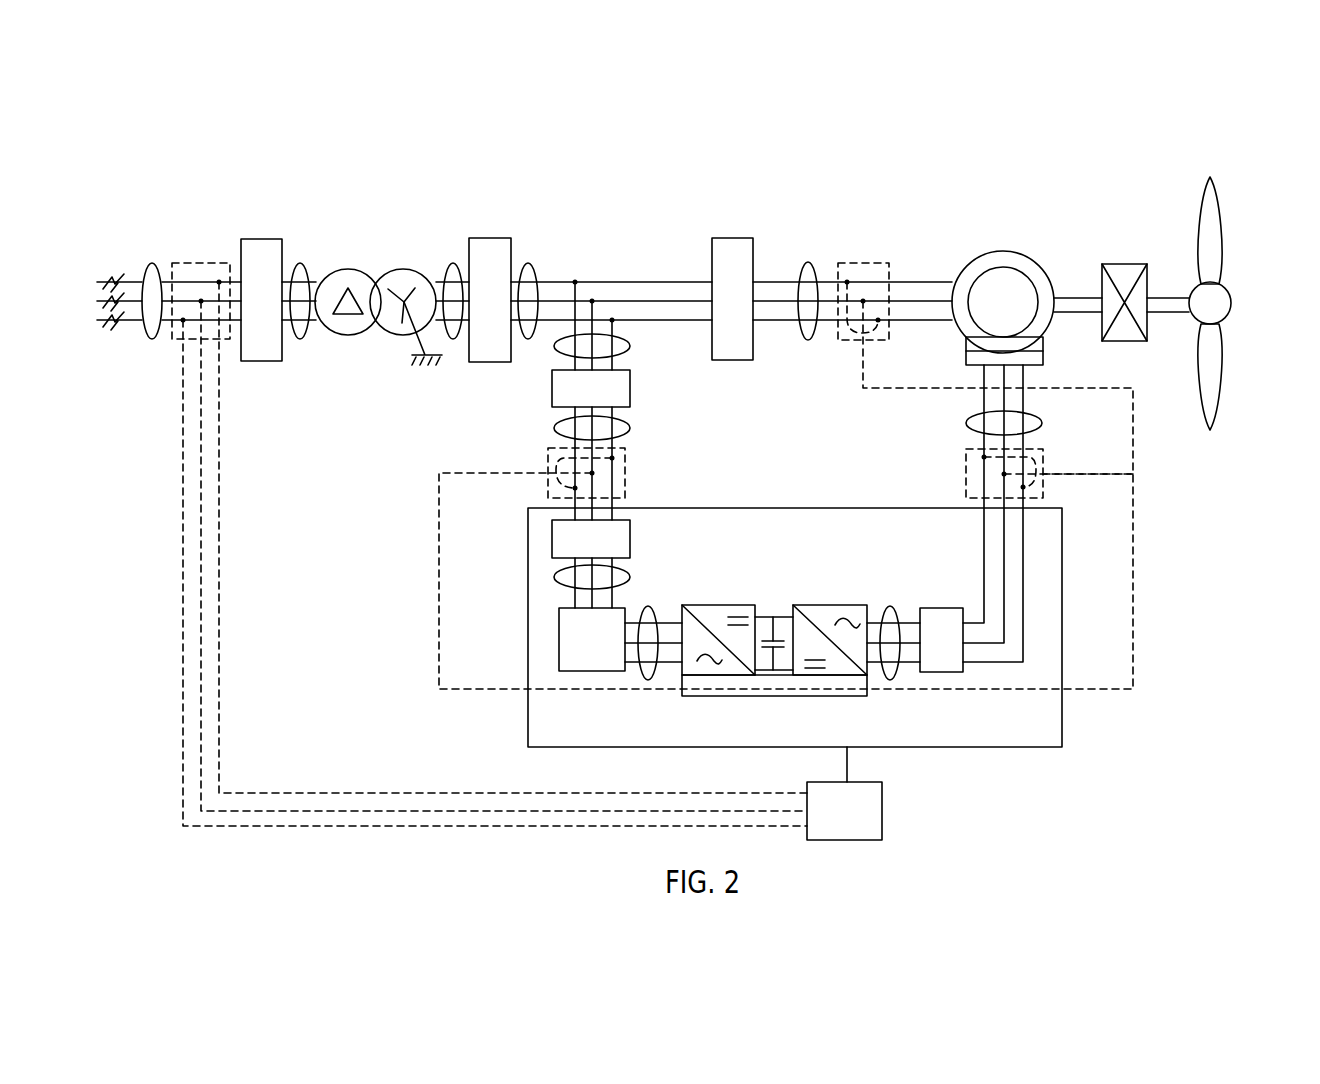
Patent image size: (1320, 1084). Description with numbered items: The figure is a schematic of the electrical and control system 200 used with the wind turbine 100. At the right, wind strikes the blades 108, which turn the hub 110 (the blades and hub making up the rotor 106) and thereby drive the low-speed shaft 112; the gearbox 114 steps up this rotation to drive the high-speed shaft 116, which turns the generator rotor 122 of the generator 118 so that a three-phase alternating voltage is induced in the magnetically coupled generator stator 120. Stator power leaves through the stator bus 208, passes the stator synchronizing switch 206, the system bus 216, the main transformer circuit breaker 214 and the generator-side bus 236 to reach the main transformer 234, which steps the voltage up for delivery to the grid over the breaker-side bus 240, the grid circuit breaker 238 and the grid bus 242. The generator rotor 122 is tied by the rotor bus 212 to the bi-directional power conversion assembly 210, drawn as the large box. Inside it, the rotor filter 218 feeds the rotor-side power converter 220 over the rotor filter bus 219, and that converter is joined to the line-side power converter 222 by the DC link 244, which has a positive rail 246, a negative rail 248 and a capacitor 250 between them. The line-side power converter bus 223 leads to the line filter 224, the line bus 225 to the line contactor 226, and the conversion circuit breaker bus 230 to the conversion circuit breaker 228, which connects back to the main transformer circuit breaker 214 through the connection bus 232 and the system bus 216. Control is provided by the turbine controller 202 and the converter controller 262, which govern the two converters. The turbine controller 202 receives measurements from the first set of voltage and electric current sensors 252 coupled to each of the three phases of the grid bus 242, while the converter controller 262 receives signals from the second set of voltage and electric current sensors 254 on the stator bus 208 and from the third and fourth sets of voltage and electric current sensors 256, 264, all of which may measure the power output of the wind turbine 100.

The wind turbine 100 is at (1172, 160).
The rotor 106 is at (1232, 270).
The blades 108 is at (1222, 222).
The hub 110 is at (1232, 318).
The low-speed shaft 112 is at (1160, 298).
The gearbox 114 is at (1125, 264).
The high-speed shaft 116 is at (1072, 298).
The generator 118 is at (960, 200).
The generator stator 120 is at (1007, 252).
The generator rotor 122 is at (986, 281).
The electrical and control system 200 is at (192, 180).
The turbine controller 202 is at (863, 827).
The stator synchronizing switch 206 is at (733, 238).
The stator bus 208 is at (808, 262).
The power conversion assembly 210 is at (1062, 590).
The rotor bus 212 is at (1040, 420).
The main transformer circuit breaker 214 is at (490, 238).
The system bus 216 is at (528, 262).
The rotor filter 218 is at (940, 608).
The rotor filter bus 219 is at (888, 605).
The rotor-side power converter 220 is at (867, 667).
The line-side power converter 222 is at (680, 667).
The line-side power converter bus 223 is at (648, 603).
The line filter 224 is at (559, 650).
The line bus 225 is at (555, 577).
The line contactor 226 is at (552, 537).
The conversion circuit breaker 228 is at (552, 384).
The conversion circuit breaker bus 230 is at (555, 428).
The connection bus 232 is at (630, 346).
The main transformer 234 is at (378, 272).
The generator-side bus 236 is at (453, 262).
The grid circuit breaker 238 is at (258, 239).
The breaker-side bus 240 is at (300, 264).
The grid bus 242 is at (148, 262).
The DC link 244 is at (775, 565).
The positive rail 246 is at (782, 615).
The negative rail 248 is at (783, 672).
The capacitor 250 is at (762, 605).
The first set of voltage and electric current sensors 252 is at (173, 353).
The second set of voltage and electric current sensors 254 is at (895, 250).
The third set of voltage and electric current sensors 256 is at (963, 475).
The converter controller 262 is at (827, 690).
The fourth set of voltage and electric current sensors 264 is at (625, 477).